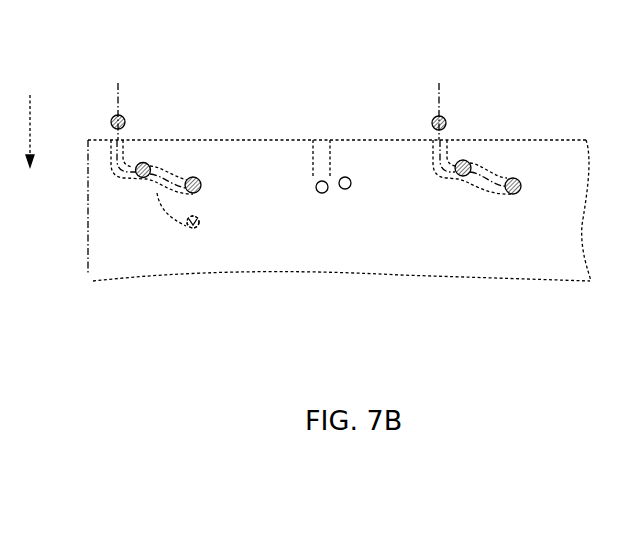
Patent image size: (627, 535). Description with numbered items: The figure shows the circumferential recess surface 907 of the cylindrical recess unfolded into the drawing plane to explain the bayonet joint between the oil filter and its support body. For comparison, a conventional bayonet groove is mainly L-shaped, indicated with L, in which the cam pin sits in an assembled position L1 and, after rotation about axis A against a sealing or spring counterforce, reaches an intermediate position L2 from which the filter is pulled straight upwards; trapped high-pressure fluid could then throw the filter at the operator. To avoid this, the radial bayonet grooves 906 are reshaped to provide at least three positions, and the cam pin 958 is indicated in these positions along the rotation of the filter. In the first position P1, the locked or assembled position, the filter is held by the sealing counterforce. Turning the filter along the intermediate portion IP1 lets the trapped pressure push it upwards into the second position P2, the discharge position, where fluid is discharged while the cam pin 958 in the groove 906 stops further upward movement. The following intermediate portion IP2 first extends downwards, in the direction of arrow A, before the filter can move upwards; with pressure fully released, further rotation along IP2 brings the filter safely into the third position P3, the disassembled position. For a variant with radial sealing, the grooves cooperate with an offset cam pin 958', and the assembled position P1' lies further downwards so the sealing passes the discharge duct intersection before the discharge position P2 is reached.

The circumferential recess surface 907 is at (392, 163).
The cam pin 958 is at (153, 126).
The offset cam pin 958' is at (172, 263).
The radial bayonet groove 906 is at (482, 188).
The first position P1 is at (209, 151).
The second position P2 is at (144, 163).
The third position P3 is at (114, 117).
The assembled position P1' is at (221, 291).
The L-shaped bayonet groove L is at (323, 160).
The assembled position of prior-art groove L1 is at (346, 177).
The intermediate position of prior-art groove L2 is at (316, 181).
The intermediate portion IP1 is at (195, 194).
The intermediate portion IP2 is at (126, 179).
The axis A is at (21, 131).